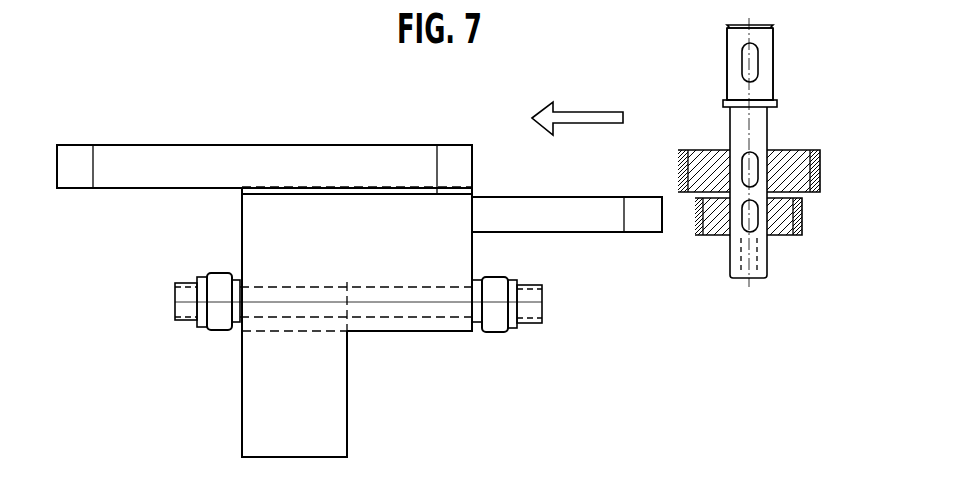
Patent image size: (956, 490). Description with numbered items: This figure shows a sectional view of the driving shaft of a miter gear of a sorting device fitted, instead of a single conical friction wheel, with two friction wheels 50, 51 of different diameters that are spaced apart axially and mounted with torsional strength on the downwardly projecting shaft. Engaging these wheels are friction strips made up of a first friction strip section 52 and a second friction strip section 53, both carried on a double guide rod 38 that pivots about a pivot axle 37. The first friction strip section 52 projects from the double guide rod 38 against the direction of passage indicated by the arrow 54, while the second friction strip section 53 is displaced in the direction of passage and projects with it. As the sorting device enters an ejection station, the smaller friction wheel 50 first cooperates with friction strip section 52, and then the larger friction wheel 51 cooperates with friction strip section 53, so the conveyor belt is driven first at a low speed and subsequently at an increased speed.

The pivot axle 37 is at (407, 308).
The double guide rod 38 is at (360, 439).
The friction wheel 50 is at (802, 224).
The friction wheel 51 is at (820, 168).
The first friction strip section 52 is at (582, 223).
The second friction strip section 53 is at (137, 157).
The arrow 54 is at (588, 113).